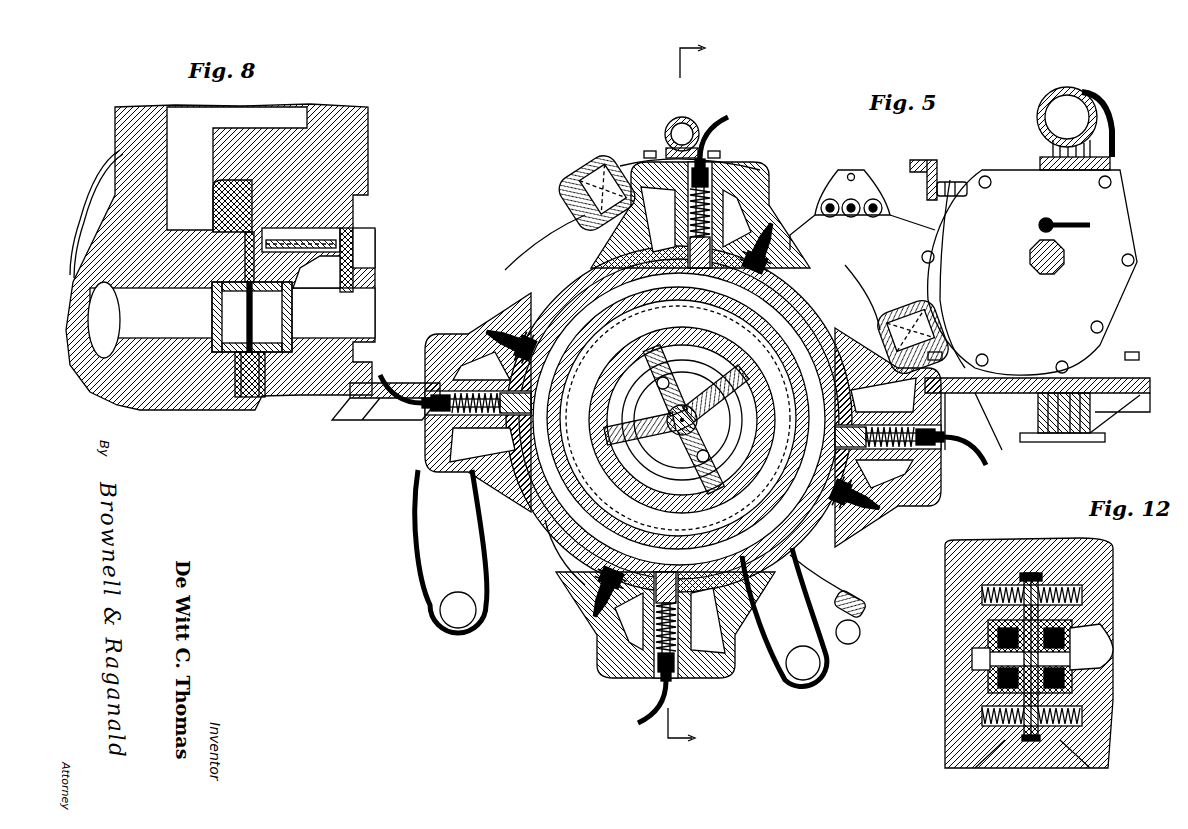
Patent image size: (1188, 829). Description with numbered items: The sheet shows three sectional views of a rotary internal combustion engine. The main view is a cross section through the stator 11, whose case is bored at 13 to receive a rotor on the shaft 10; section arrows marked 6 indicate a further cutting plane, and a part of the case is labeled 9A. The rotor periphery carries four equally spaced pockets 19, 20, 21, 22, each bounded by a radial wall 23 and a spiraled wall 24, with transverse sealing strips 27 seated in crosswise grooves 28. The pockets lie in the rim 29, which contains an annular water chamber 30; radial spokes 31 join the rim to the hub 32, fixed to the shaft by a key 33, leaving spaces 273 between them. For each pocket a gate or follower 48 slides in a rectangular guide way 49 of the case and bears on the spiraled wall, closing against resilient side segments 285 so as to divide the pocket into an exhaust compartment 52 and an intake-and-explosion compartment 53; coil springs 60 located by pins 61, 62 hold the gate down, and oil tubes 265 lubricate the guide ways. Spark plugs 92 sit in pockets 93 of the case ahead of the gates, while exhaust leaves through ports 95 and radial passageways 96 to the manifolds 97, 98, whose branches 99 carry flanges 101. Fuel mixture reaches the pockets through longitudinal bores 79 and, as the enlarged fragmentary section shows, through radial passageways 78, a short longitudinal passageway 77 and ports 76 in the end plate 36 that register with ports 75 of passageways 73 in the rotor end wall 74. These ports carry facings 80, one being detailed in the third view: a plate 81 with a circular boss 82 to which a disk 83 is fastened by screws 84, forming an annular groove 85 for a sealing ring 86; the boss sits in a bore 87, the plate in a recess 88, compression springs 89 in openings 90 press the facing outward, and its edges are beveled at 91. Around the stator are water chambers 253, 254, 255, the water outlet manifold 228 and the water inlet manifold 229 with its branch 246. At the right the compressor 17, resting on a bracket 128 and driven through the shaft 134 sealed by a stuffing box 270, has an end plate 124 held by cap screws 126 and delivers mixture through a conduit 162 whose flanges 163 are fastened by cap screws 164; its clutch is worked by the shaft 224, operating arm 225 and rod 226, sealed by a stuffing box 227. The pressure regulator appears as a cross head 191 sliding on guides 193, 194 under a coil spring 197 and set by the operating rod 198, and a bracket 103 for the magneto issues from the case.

In FIG. 5, the section line 6 is at (697, 395).
In FIG. 5, the vane 9A is at (757, 200).
In FIG. 5, the shaft 10 is at (742, 421).
In FIG. 8, the stator 11 is at (122, 110).
In FIG. 5, the bore 13 is at (621, 285).
In FIG. 5, the compressor 17 is at (1108, 242).
In FIG. 5, the pocket 19 is at (622, 300).
In FIG. 5, the pocket 20 is at (795, 405).
In FIG. 5, the pocket 21 is at (725, 532).
In FIG. 5, the pocket 22 is at (615, 462).
In FIG. 5, the radial wall 23 is at (735, 303).
In FIG. 5, the spiraled wall 24 is at (650, 300).
In FIG. 5, the transverse sealing strip 27 is at (610, 356).
In FIG. 5, the groove 28 is at (602, 350).
In FIG. 5, the rim portion 29 is at (780, 506).
In FIG. 5, the water chamber 30 is at (562, 502).
In FIG. 5, the radial spoke 31 is at (742, 370).
In FIG. 5, the hub 32 is at (684, 402).
In FIG. 5, the key 33 is at (668, 434).
In FIG. 8, the end plate 36 is at (165, 400).
In FIG. 5, the gate or follower 48 is at (722, 190).
In FIG. 5, the guide way 49 is at (712, 178).
In FIG. 5, the compartment 52 is at (676, 287).
In FIG. 5, the compartment 53 is at (720, 292).
In FIG. 5, the coil spring 60 is at (640, 650).
In FIG. 5, the pin 61 is at (676, 678).
In FIG. 5, the pin 62 is at (695, 548).
In FIG. 8, the passageway 73 is at (342, 300).
In FIG. 8, the end wall 74 is at (262, 355).
In FIG. 8, the port 75 is at (275, 350).
In FIG. 8, the port 76 is at (232, 352).
In FIG. 8, the longitudinal passageway 77 is at (198, 345).
In FIG. 8, the radial passageway 78 is at (98, 355).
In FIG. 5, the longitudinal bore 79 is at (540, 290).
In FIG. 8, the port facing 80 is at (218, 300).
In FIG. 12, the port facing 80 is at (1072, 602).
In FIG. 8, the plate-like member 81 is at (235, 245).
In FIG. 12, the circular boss 82 is at (990, 680).
In FIG. 12, the disk 83 is at (1000, 700).
In FIG. 12, the screw 84 is at (988, 625).
In FIG. 8, the annular groove 85 is at (240, 182).
In FIG. 8, the sealing ring 86 is at (252, 317).
In FIG. 8, the bore 87 is at (246, 255).
In FIG. 8, the recess 88 is at (249, 355).
In FIG. 12, the recess 88 is at (1036, 575).
In FIG. 12, the compression spring 89 is at (946, 553).
In FIG. 12, the opening 90 is at (982, 596).
In FIG. 8, the beveled edge 91 is at (215, 328).
In FIG. 12, the beveled edge 91 is at (1010, 580).
In FIG. 5, the spark plug 92 is at (782, 232).
In FIG. 12, the spark plug 92 is at (1050, 768).
In FIG. 5, the pocket 93 is at (760, 220).
In FIG. 5, the exhaust port 95 is at (673, 246).
In FIG. 5, the radial passageway 96 is at (655, 196).
In FIG. 5, the exhaust manifold 97 is at (796, 690).
In FIG. 5, the exhaust manifold 98 is at (452, 630).
In FIG. 5, the branch 99 is at (568, 190).
In FIG. 5, the flange 101 is at (582, 166).
In FIG. 5, the bracket 103 is at (372, 400).
In FIG. 5, the end plate 124 is at (1100, 322).
In FIG. 5, the cap screw 126 is at (936, 255).
In FIG. 5, the bracket 128 is at (1105, 420).
In FIG. 5, the compressor shaft 134 is at (1048, 276).
In FIG. 5, the conduit 162 is at (1050, 98).
In FIG. 5, the flange 163 is at (1112, 148).
In FIG. 5, the cap screw 164 is at (1122, 172).
In FIG. 5, the cross head 191 is at (858, 190).
In FIG. 5, the guide 193 is at (876, 206).
In FIG. 5, the guide 194 is at (830, 204).
In FIG. 5, the compression coil spring 197 is at (912, 232).
In FIG. 5, the operating rod 198 is at (851, 173).
In FIG. 5, the shaft 224 is at (962, 188).
In FIG. 5, the operating arm 225 is at (937, 176).
In FIG. 5, the operating rod 226 is at (910, 165).
In FIG. 5, the stuffing box 227 is at (968, 196).
In FIG. 5, the water outlet manifold 228 is at (670, 124).
In FIG. 5, the water inlet manifold 229 is at (848, 645).
In FIG. 5, the branch 246 is at (850, 608).
In FIG. 5, the water chamber 253 is at (568, 246).
In FIG. 5, the water chamber 254 is at (760, 200).
In FIG. 5, the water chamber 255 is at (632, 190).
In FIG. 5, the oil tube 265 is at (705, 126).
In FIG. 5, the stuffing box 270 is at (1066, 262).
In FIG. 5, the space 273 is at (760, 445).
In FIG. 8, the resilient side segment 285 is at (353, 240).